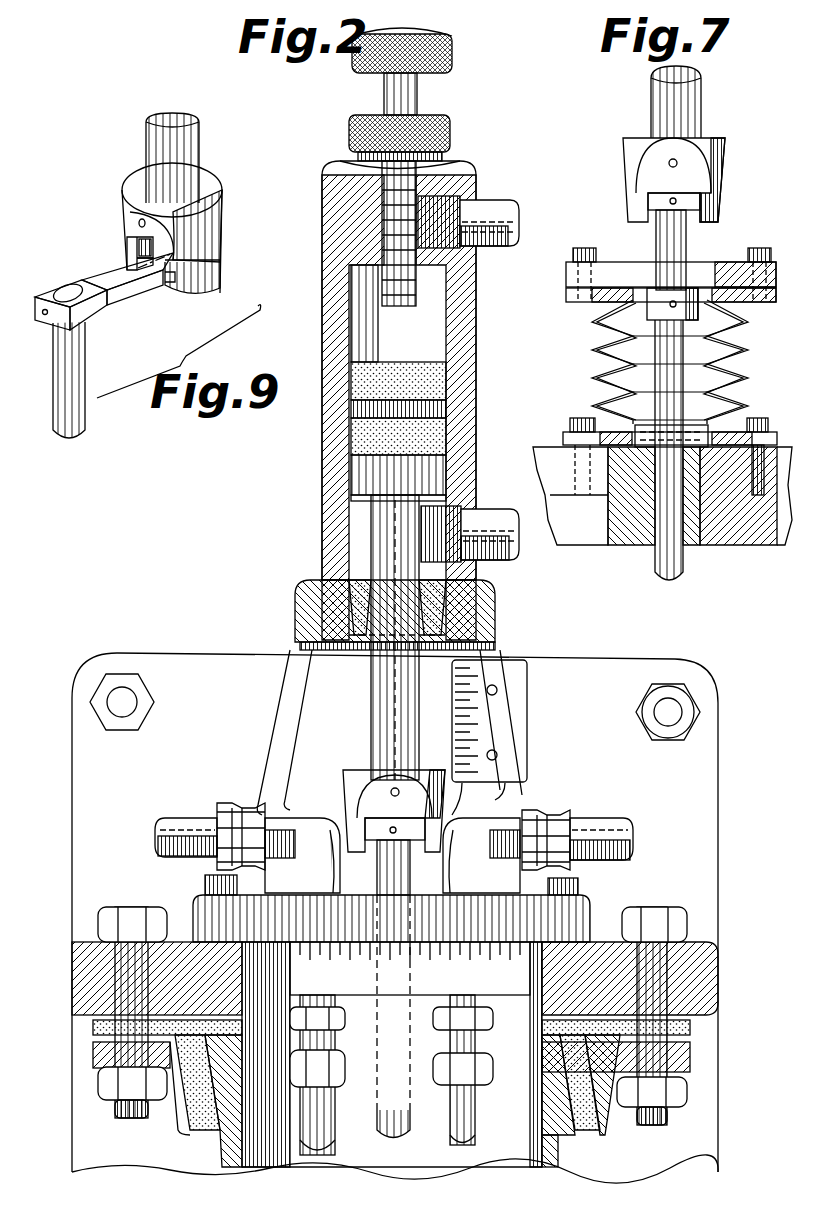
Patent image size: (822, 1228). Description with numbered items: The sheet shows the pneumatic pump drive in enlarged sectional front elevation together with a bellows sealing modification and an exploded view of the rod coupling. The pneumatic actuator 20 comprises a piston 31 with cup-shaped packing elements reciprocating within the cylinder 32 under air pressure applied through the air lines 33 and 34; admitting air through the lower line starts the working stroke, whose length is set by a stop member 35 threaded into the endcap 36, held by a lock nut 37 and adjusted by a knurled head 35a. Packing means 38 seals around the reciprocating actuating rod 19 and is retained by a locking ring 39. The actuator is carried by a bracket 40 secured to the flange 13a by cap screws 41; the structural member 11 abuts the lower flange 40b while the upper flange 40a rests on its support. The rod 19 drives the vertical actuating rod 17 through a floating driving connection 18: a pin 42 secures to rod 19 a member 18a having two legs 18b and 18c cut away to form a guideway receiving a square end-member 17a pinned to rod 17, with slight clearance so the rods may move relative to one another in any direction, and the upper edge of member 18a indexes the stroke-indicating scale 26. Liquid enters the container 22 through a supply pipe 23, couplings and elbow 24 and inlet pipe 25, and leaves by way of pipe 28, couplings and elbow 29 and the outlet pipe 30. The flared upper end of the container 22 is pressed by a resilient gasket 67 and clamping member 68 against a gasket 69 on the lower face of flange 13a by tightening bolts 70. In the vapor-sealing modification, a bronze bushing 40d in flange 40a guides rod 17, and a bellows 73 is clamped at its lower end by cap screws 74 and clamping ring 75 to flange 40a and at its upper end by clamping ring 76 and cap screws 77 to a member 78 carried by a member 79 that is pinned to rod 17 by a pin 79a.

In FIG. 2, the structural member 11 is at (418, 1105).
In FIG. 2, the flange 13a is at (718, 960).
In FIG. 2, the actuating rod 17 is at (385, 875).
In FIG. 7, the actuating rod 17 is at (665, 525).
In FIG. 9, the actuating rod 17 is at (53, 425).
In FIG. 9, the square end-member 17a is at (90, 290).
In FIG. 2, the floating driving connection 18 is at (391, 789).
In FIG. 7, the floating driving connection 18 is at (679, 164).
In FIG. 9, the floating driving connection 18 is at (161, 229).
In FIG. 2, the member 18a is at (435, 775).
In FIG. 7, the member 18a is at (722, 150).
In FIG. 9, the member 18a is at (128, 178).
In FIG. 9, the leg 18b is at (125, 248).
In FIG. 9, the leg 18c is at (212, 290).
In FIG. 2, the actuating rod 19 is at (380, 698).
In FIG. 7, the actuating rod 19 is at (700, 112).
In FIG. 9, the actuating rod 19 is at (197, 150).
In FIG. 2, the pneumatic actuator 20 is at (515, 354).
In FIG. 2, the container 22 is at (558, 1155).
In FIG. 2, the supply pipe 23 is at (186, 825).
In FIG. 2, the elbow 24 is at (308, 820).
In FIG. 2, the inlet pipe 25 is at (325, 1125).
In FIG. 2, the stroke-indicating scale 26 is at (453, 680).
In FIG. 2, the pipe 28 is at (476, 1125).
In FIG. 2, the elbow 29 is at (468, 830).
In FIG. 2, the outlet pipe 30 is at (604, 825).
In FIG. 2, the piston 31 is at (355, 409).
In FIG. 2, the cylinder 32 is at (372, 330).
In FIG. 2, the air line 33 is at (497, 205).
In FIG. 2, the air line 34 is at (500, 505).
In FIG. 2, the stop member 35 is at (417, 292).
In FIG. 2, the knurled head 35a is at (453, 60).
In FIG. 2, the endcap 36 is at (330, 172).
In FIG. 2, the lock nut 37 is at (451, 128).
In FIG. 2, the packing means 38 is at (435, 625).
In FIG. 2, the locking ring 39 is at (330, 628).
In FIG. 2, the bracket 40 is at (285, 718).
In FIG. 2, the upper flange 40a is at (590, 905).
In FIG. 7, the upper flange 40a is at (560, 500).
In FIG. 2, the lower flange 40b is at (508, 995).
In FIG. 7, the lower flange 40b is at (776, 520).
In FIG. 7, the bronze bushing 40d is at (690, 545).
In FIG. 2, the cap screws 41 is at (205, 880).
In FIG. 2, the pin 42 is at (395, 792).
In FIG. 7, the pin 42 is at (668, 163).
In FIG. 9, the pin 42 is at (137, 223).
In FIG. 2, the gasket 67 is at (190, 1118).
In FIG. 2, the clamping member 68 is at (600, 1120).
In FIG. 2, the gasket 69 is at (690, 1028).
In FIG. 2, the tightening bolts 70 is at (128, 912).
In FIG. 7, the bellows 73 is at (735, 366).
In FIG. 7, the cap screws 74 is at (580, 418).
In FIG. 7, the clamping ring 75 is at (563, 438).
In FIG. 7, the clamping ring 76 is at (592, 300).
In FIG. 7, the cap screws 77 is at (585, 248).
In FIG. 7, the member 78 is at (626, 262).
In FIG. 7, the member 79 is at (687, 250).
In FIG. 7, the pin 79a is at (725, 335).